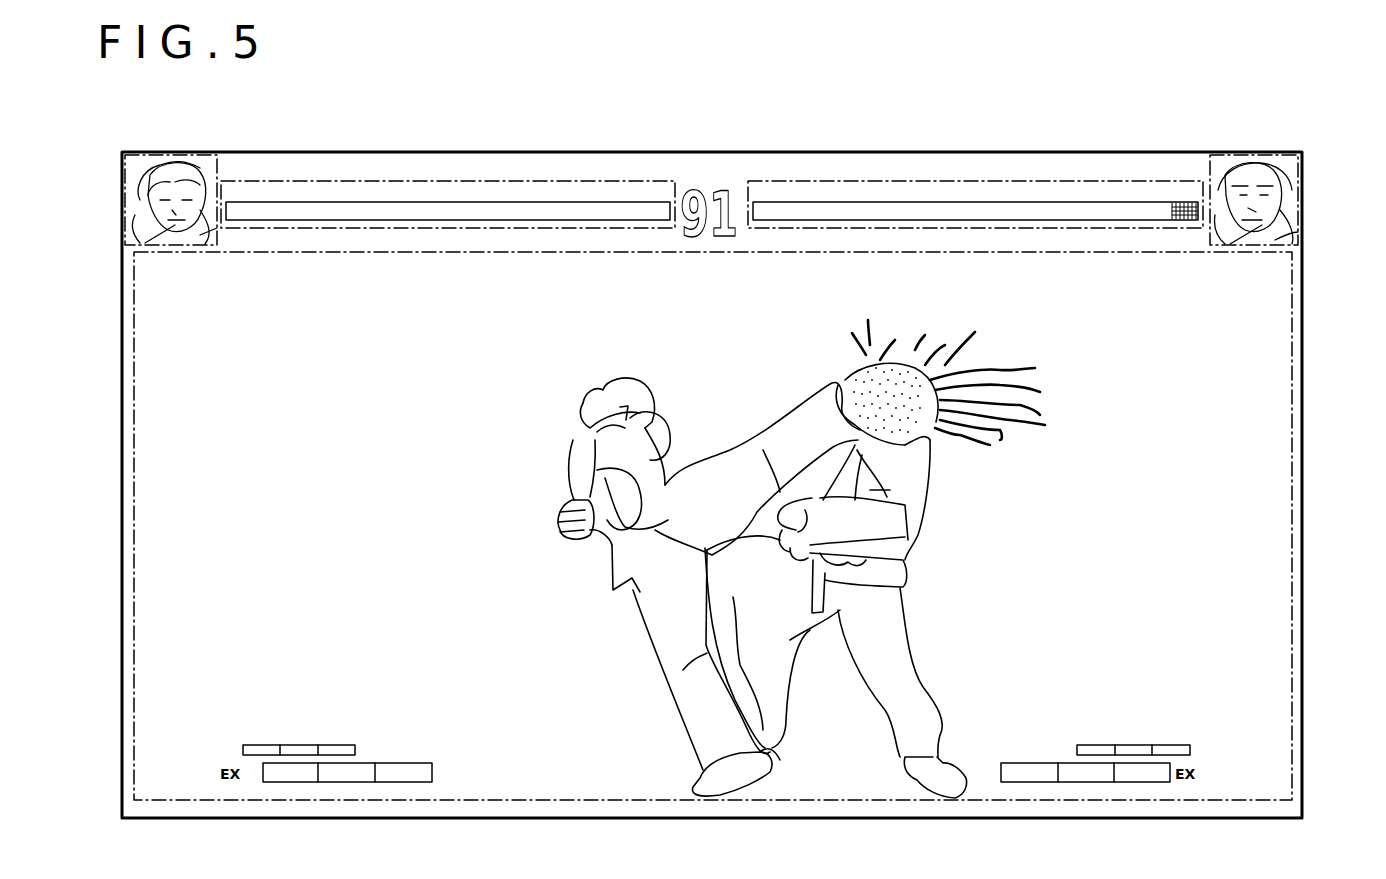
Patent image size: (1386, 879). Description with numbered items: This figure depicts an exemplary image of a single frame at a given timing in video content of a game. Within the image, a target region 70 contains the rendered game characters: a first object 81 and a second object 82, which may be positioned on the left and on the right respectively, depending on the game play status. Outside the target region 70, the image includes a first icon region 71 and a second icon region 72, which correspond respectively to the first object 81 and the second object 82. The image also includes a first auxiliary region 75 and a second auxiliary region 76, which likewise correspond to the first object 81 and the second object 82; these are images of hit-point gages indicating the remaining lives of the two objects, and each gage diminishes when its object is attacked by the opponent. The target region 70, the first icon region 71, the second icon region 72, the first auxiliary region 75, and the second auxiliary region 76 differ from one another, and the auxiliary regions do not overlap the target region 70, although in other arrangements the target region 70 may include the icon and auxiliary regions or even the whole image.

The target region 70 is at (1303, 445).
The first icon region 71 is at (222, 162).
The second icon region 72 is at (1208, 162).
The first auxiliary region 75 is at (378, 181).
The second auxiliary region 76 is at (959, 181).
The first object 81 is at (568, 470).
The second object 82 is at (925, 495).